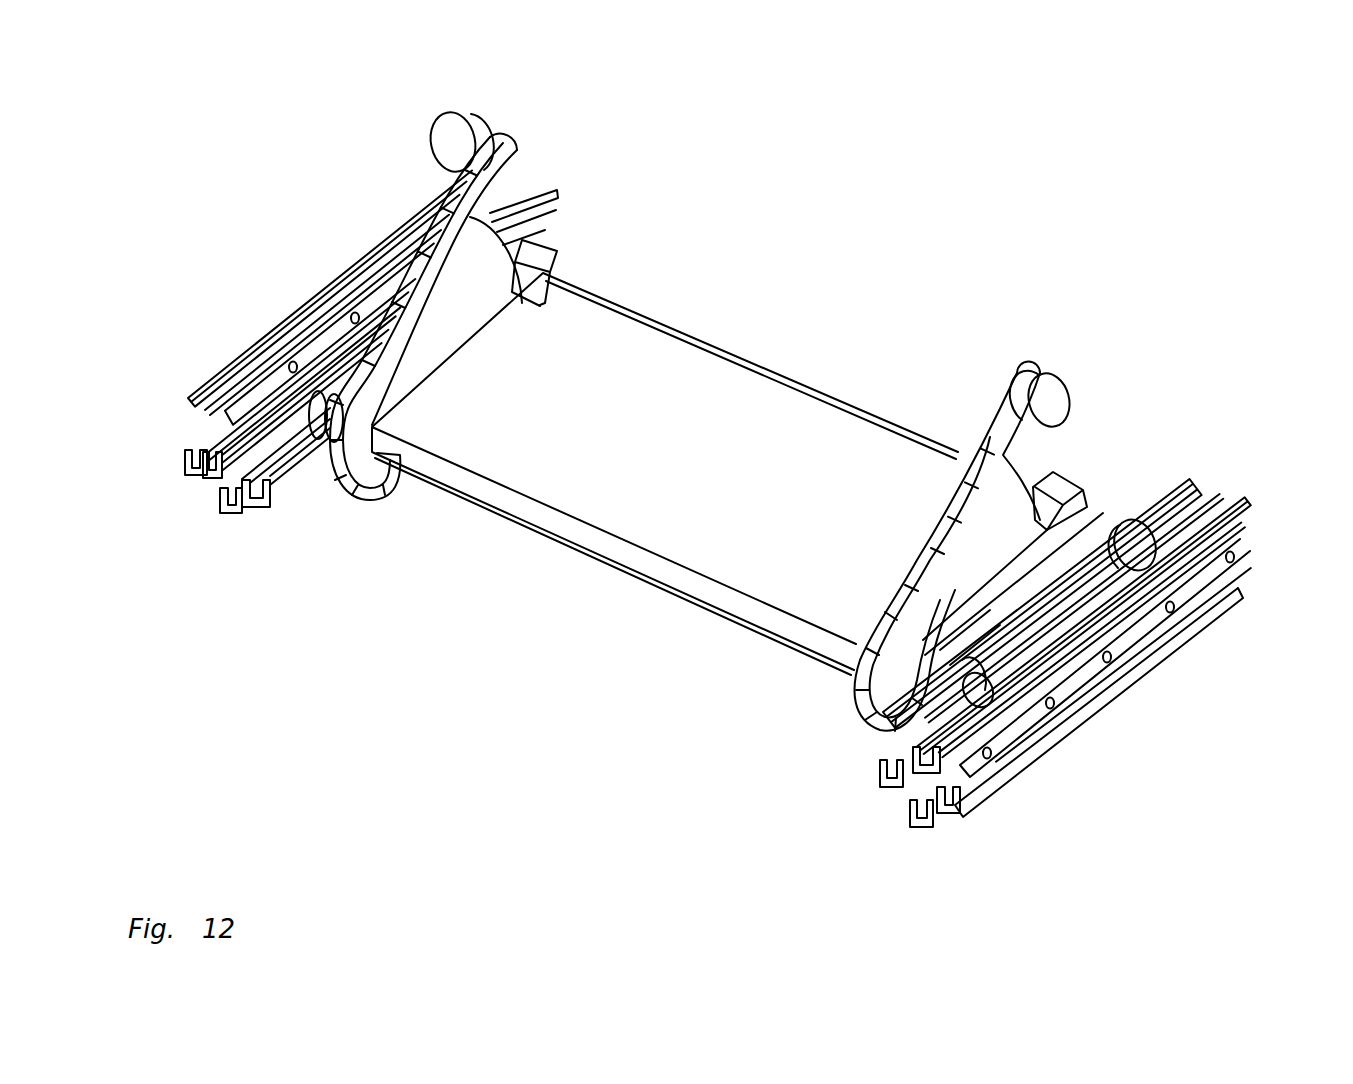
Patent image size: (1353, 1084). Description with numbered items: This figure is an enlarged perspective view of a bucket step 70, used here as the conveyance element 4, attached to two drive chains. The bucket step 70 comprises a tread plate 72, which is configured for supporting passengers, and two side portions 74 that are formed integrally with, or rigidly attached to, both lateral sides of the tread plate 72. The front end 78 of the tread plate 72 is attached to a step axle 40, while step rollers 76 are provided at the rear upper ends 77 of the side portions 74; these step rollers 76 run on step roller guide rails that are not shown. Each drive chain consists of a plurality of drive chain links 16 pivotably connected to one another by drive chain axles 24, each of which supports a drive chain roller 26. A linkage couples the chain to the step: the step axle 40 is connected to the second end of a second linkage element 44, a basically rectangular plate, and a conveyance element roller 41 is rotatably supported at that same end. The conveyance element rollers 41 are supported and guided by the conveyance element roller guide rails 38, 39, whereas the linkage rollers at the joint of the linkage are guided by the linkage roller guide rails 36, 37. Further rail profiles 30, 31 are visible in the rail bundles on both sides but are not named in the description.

The conveyance element 4 is at (870, 270).
The drive chain link 16 is at (327, 343).
The drive chain axle 24 is at (357, 313).
The drive chain roller 26 is at (290, 353).
The support profile 30 is at (190, 467).
The guide profile 31 is at (213, 378).
The linkage roller guide rail 36 is at (242, 515).
The linkage roller guide rail 37 is at (222, 462).
The conveyance element roller guide rail 38 is at (280, 494).
The conveyance element roller guide rail 39 is at (556, 200).
The step axle 40 is at (908, 725).
The conveyance element roller 41 is at (978, 675).
The second linkage element 44 is at (985, 690).
The bucket step 70 is at (800, 298).
The tread plate 72 is at (773, 573).
The side portion 74 is at (487, 262).
The step roller 76 is at (478, 118).
The rear upper end 77 is at (535, 126).
The front end 78 is at (427, 548).